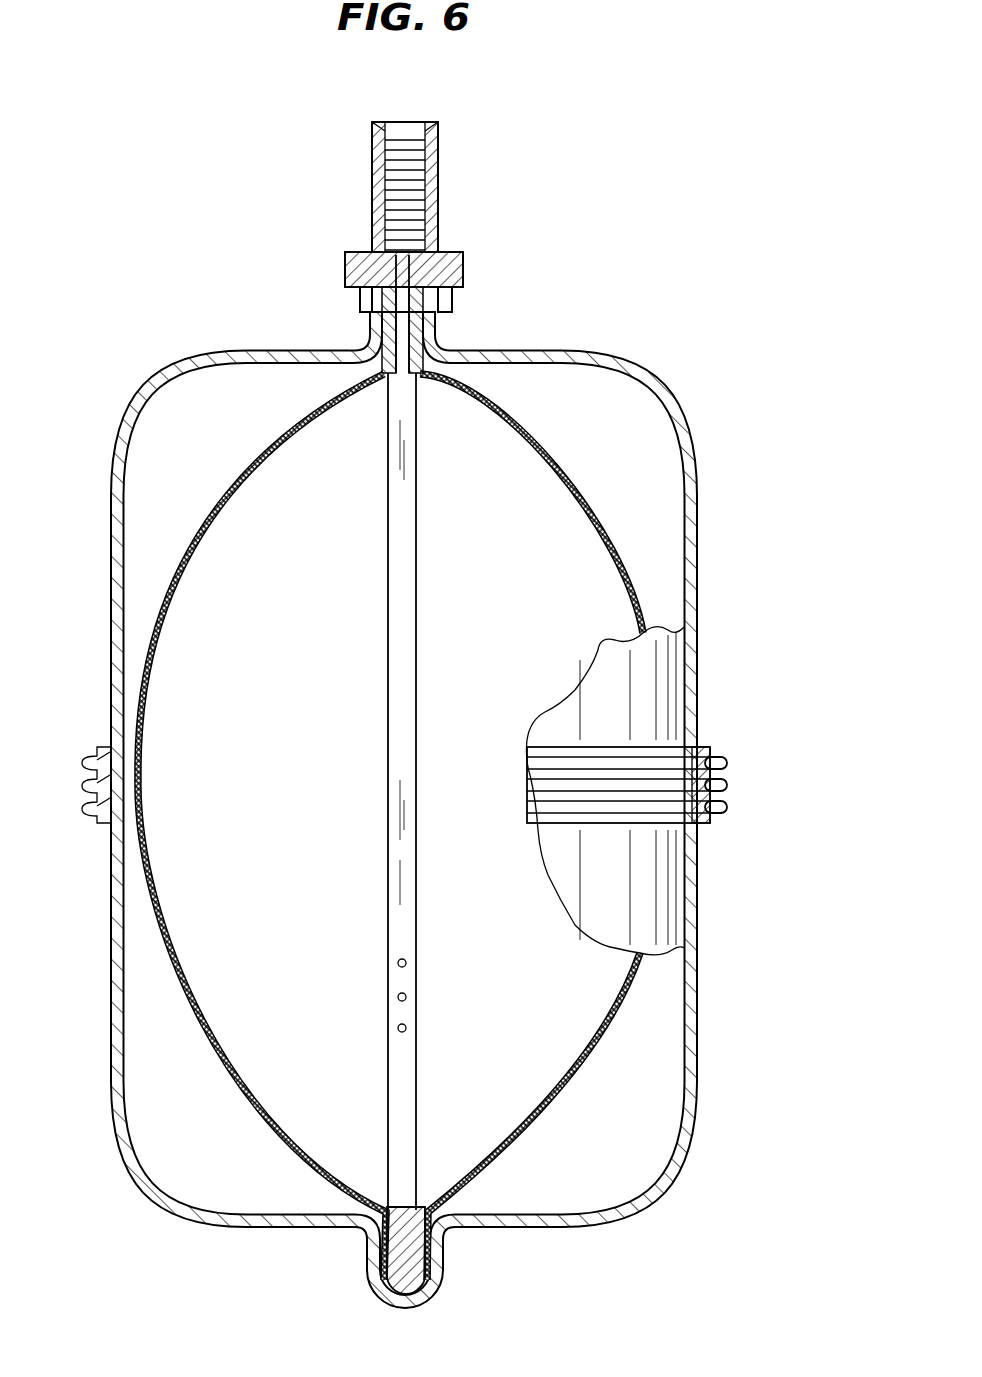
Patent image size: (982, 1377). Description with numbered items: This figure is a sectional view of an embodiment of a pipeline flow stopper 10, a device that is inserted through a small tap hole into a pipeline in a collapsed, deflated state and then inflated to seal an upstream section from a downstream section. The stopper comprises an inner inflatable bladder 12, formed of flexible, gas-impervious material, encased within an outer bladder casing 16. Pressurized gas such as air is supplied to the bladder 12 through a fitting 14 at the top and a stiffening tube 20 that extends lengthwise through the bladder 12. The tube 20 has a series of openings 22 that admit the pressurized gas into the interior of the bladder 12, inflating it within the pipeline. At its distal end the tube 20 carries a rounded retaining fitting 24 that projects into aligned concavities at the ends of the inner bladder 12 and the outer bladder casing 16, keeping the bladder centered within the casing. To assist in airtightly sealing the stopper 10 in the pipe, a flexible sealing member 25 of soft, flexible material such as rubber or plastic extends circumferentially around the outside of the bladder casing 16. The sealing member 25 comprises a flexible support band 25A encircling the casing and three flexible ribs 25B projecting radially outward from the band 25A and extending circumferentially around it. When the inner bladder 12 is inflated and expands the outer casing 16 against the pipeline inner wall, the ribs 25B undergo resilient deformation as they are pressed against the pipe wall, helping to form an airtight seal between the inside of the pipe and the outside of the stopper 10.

The pipeline flow stopper 10 is at (650, 208).
The inner inflatable bladder 12 is at (563, 483).
The fitting 14 is at (440, 192).
The outer bladder casing 16 is at (697, 548).
The stiffening tube 20 is at (416, 896).
The openings 22 is at (406, 963).
The rounded retaining fitting 24 is at (405, 1253).
The flexible sealing member 25 is at (623, 747).
The flexible support band 25A is at (700, 747).
The flexible ribs 25B is at (727, 785).